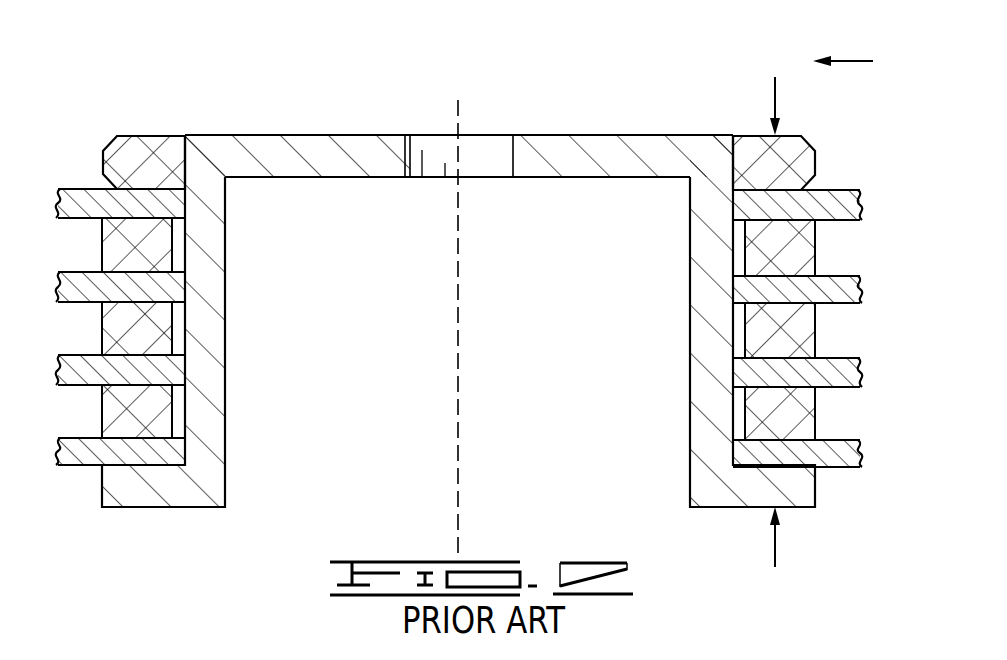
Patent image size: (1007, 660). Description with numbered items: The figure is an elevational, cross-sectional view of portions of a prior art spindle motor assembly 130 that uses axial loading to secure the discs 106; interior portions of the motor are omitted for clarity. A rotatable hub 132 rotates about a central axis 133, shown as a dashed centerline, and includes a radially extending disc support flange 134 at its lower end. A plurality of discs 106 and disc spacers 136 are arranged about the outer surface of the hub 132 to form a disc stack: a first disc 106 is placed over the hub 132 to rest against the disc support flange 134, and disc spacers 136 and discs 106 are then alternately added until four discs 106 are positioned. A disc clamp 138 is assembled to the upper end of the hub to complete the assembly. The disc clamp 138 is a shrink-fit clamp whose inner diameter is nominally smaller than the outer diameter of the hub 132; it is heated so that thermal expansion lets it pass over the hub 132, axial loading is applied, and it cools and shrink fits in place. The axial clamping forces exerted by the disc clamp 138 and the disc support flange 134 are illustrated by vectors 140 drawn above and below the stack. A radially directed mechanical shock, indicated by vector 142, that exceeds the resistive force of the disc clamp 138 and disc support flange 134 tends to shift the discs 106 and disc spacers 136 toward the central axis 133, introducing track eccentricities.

The spindle motor assembly 130 is at (458, 279).
The rotatable hub 132 is at (322, 126).
The central axis 133 is at (458, 371).
The disc support flange 134 is at (197, 497).
The disc spacers 136 is at (120, 253).
The disc clamp 138 is at (140, 142).
The vectors 140 is at (775, 97).
The vector 142 is at (857, 60).
The discs 106 is at (828, 197).